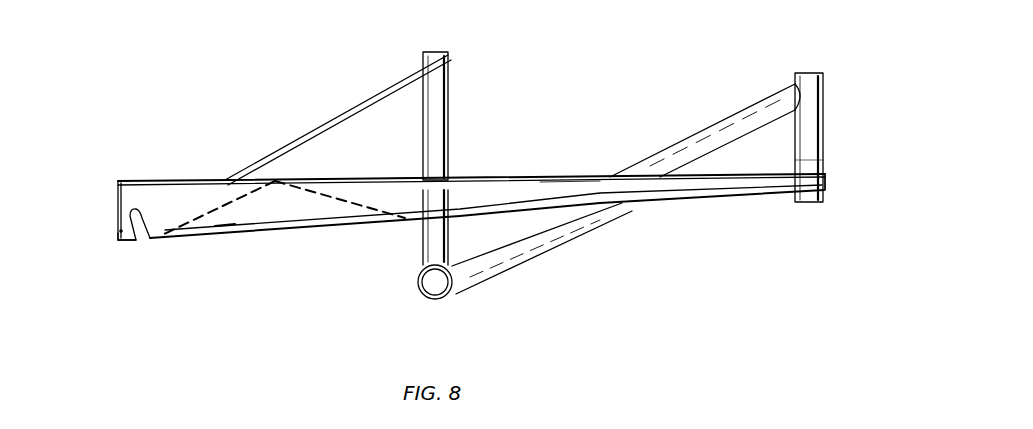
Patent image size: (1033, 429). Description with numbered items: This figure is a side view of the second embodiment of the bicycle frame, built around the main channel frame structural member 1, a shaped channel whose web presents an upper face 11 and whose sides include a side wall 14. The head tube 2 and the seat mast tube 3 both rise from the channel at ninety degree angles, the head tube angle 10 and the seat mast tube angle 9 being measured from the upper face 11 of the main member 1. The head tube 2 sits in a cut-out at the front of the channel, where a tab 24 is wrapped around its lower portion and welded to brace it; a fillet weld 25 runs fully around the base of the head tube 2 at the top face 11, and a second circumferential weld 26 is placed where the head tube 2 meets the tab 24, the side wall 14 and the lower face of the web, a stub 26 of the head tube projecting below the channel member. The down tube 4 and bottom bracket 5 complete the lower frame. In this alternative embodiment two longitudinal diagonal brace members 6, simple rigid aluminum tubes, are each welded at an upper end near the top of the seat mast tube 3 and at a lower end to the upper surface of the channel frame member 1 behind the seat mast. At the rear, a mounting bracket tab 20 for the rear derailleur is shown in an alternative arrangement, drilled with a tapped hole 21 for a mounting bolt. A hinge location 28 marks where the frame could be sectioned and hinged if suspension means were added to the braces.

The main channel frame structural member 1 is at (540, 187).
The head tube 2 is at (824, 96).
The seat mast tube 3 is at (450, 75).
The down tube 4 is at (333, 170).
The bottom bracket 5 is at (444, 300).
The longitudinal diagonal brace members 6 is at (358, 104).
The seat mast tube angle 9 is at (418, 143).
The head tube angle 10 is at (790, 146).
The upper face of the web 11 is at (573, 166).
The side wall 14 is at (247, 240).
The mounting bracket tab 20 is at (135, 242).
The hole 21 is at (116, 241).
The tab 24 is at (826, 178).
The fillet weld 25 is at (830, 160).
The second weld / head tube stub 26 is at (848, 200).
The hinge location 28 is at (272, 177).